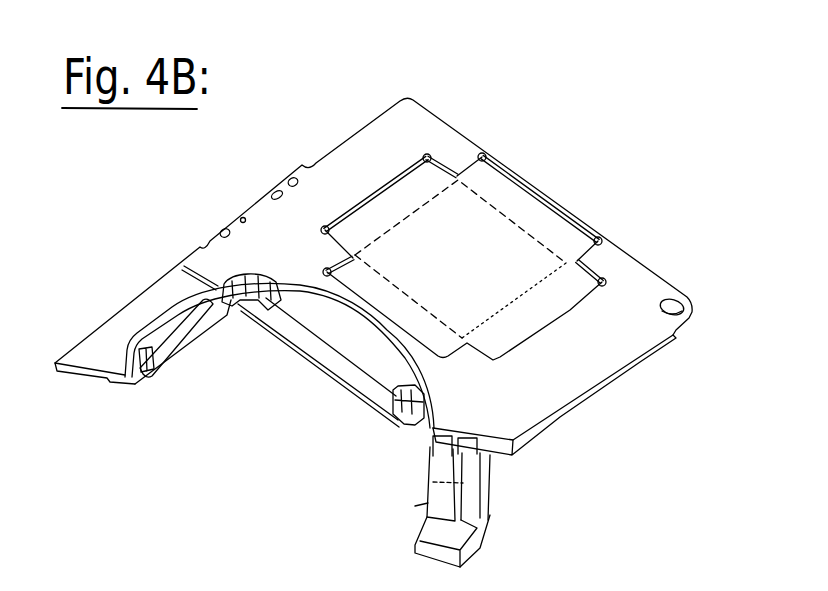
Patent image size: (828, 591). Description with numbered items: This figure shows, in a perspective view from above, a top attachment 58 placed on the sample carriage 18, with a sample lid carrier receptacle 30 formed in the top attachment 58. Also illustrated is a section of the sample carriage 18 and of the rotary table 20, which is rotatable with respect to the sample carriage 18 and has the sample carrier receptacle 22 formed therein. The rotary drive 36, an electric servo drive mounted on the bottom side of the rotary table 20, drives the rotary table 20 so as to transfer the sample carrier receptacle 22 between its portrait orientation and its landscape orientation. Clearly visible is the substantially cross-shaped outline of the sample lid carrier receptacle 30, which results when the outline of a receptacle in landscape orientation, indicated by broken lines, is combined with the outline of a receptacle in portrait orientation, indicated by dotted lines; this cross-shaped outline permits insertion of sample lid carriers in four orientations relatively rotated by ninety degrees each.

The sample carriage 18 is at (98, 340).
The rotary table 20 is at (370, 345).
The sample carrier receptacle 22 is at (277, 323).
The sample lid carrier receptacle 30 is at (527, 233).
The rotary drive 36 is at (445, 493).
The top attachment 58 is at (492, 100).